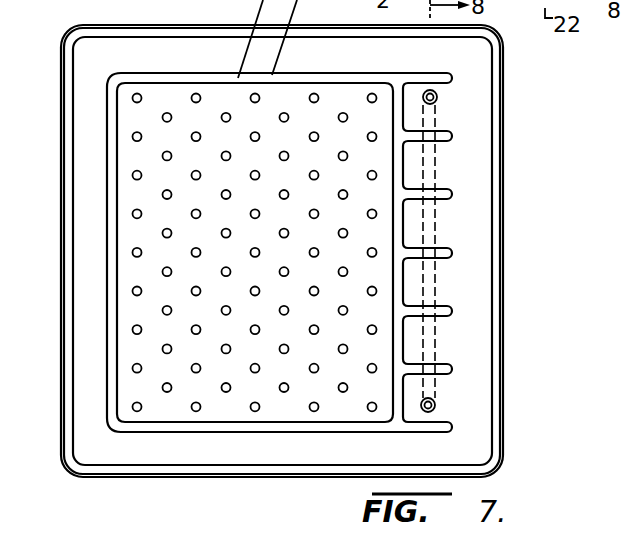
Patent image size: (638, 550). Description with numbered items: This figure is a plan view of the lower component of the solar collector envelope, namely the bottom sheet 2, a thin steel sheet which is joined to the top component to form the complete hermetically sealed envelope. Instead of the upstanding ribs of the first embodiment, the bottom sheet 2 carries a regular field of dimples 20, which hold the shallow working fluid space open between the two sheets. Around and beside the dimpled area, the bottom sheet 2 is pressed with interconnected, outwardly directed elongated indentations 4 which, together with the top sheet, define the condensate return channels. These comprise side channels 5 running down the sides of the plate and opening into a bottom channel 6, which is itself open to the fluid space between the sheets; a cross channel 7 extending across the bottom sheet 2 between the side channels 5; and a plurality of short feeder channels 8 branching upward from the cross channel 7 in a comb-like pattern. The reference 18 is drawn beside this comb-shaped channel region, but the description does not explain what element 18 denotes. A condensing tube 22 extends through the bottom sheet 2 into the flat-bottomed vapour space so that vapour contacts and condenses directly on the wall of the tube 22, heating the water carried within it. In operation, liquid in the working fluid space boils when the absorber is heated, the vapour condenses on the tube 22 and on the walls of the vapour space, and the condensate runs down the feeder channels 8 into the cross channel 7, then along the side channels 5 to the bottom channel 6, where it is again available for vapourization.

The bottom sheet 2 is at (508, 211).
The elongated indentations 4 is at (255, 432).
The side channels 5 is at (212, 428).
The bottom channel 6 is at (115, 234).
The cross channel 7 is at (397, 348).
The feeder channels 8 is at (428, 112).
The heating element 18 is at (445, 194).
The dimples 20 is at (252, 176).
The condensing tube 22 is at (437, 99).